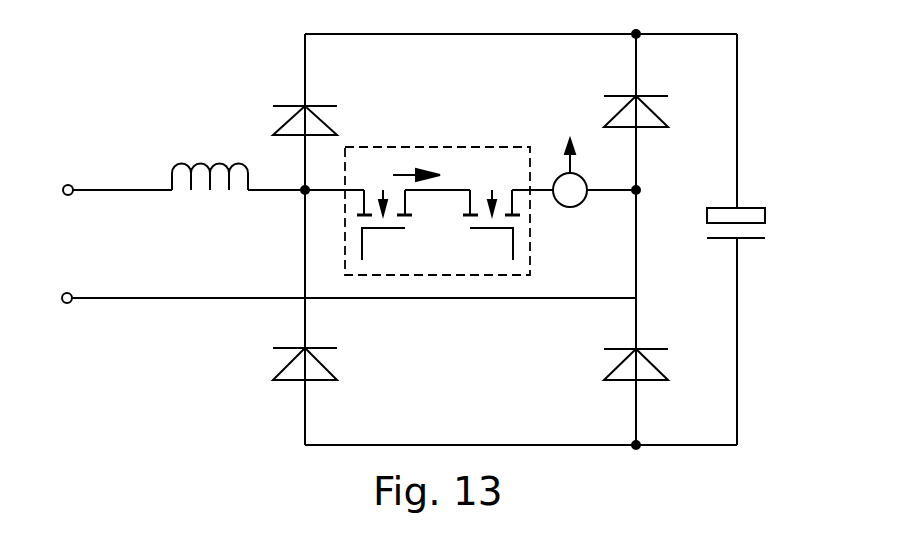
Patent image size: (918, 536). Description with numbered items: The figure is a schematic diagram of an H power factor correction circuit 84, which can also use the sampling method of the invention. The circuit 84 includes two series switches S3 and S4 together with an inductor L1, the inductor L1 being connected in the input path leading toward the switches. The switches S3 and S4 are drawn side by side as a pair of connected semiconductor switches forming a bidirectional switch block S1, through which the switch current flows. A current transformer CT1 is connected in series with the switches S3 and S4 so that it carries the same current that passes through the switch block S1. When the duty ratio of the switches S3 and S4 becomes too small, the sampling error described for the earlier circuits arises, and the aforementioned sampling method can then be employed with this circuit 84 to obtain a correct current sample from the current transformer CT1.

The circuit 84 is at (122, 69).
The inductor L1 is at (268, 160).
The bidirectional switch S1 is at (387, 146).
The switch S3 is at (384, 228).
The switch S4 is at (491, 228).
The current transformer CT1 is at (594, 189).